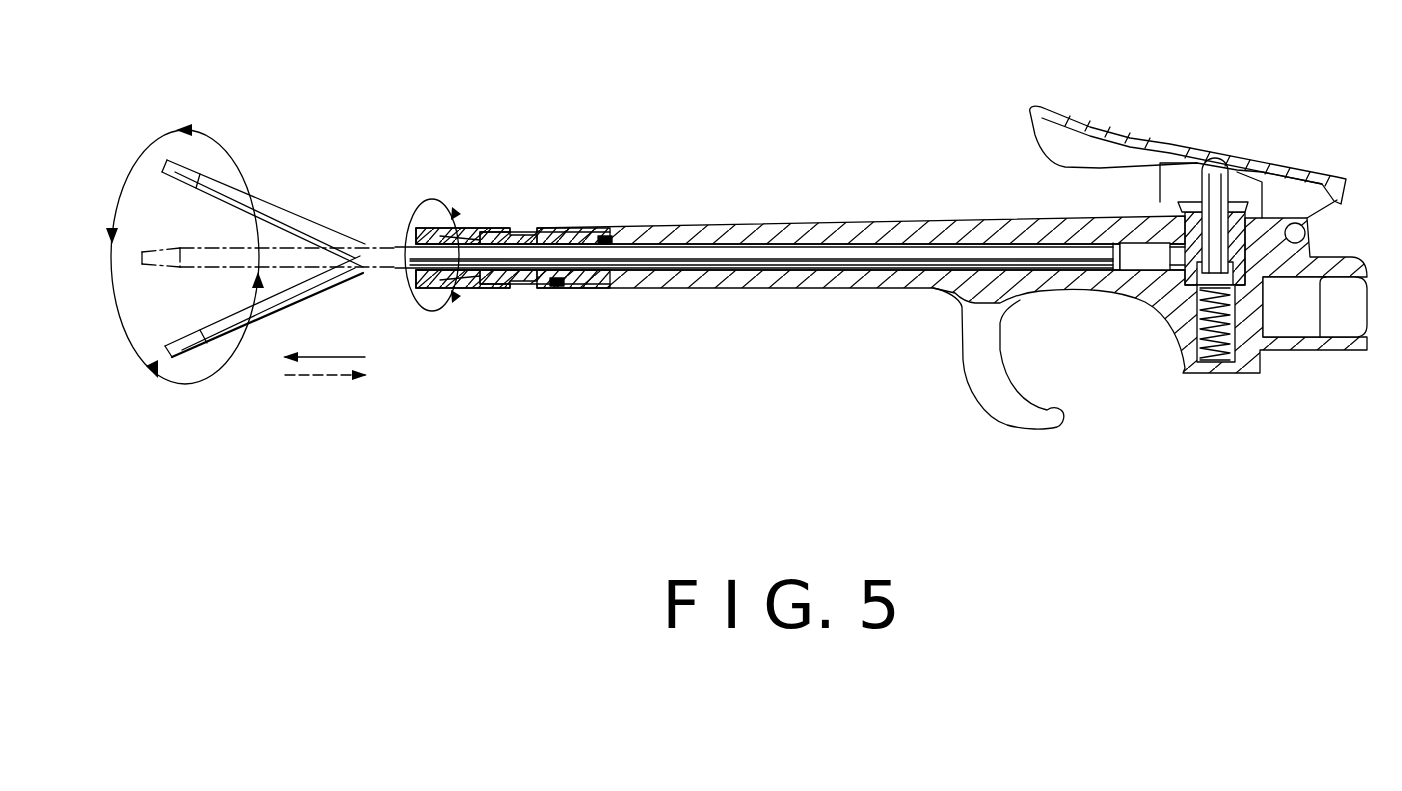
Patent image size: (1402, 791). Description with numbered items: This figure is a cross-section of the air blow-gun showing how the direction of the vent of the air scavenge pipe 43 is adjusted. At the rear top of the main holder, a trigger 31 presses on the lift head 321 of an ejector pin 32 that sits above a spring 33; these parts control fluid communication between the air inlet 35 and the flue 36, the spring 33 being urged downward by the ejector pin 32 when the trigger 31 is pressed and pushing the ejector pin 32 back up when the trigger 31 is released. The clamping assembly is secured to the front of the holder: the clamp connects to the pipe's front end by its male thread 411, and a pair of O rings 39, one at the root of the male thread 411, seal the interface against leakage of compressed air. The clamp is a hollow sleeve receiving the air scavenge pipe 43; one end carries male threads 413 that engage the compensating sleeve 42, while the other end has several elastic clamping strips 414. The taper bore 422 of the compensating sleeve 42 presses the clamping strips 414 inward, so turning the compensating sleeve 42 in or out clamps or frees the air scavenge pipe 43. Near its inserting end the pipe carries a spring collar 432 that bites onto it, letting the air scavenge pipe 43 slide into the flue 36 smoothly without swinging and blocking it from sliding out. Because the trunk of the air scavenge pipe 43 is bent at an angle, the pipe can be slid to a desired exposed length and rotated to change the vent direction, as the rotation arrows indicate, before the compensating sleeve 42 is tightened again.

The trigger 31 is at (1112, 146).
The lift head 321 is at (1214, 167).
The ejector pin 32 is at (1213, 263).
The spring 33 is at (1218, 358).
The air inlet 35 is at (1297, 325).
The flue 36 is at (1143, 260).
The O ring 39 is at (606, 238).
The compensating sleeve 42 is at (470, 288).
The taper bore 422 is at (428, 228).
The male thread 411 is at (582, 232).
The male threads 413 is at (524, 232).
The elastic clamping strips 414 is at (492, 288).
The air scavenge pipe 43 is at (668, 262).
The spring collar 432 is at (1113, 243).